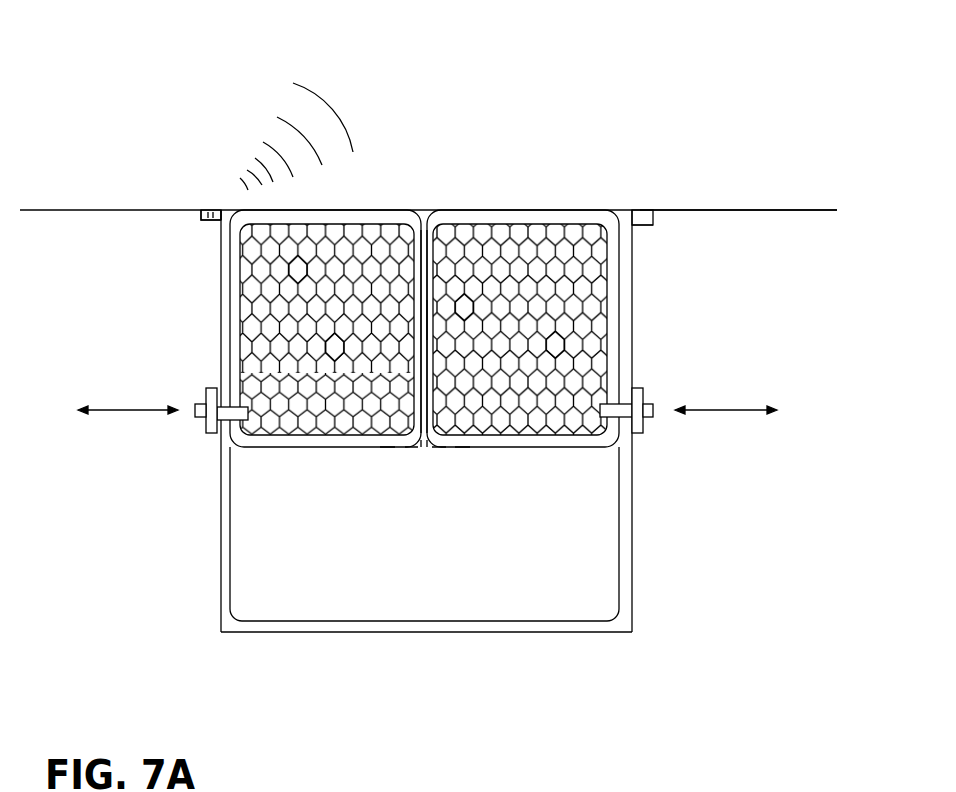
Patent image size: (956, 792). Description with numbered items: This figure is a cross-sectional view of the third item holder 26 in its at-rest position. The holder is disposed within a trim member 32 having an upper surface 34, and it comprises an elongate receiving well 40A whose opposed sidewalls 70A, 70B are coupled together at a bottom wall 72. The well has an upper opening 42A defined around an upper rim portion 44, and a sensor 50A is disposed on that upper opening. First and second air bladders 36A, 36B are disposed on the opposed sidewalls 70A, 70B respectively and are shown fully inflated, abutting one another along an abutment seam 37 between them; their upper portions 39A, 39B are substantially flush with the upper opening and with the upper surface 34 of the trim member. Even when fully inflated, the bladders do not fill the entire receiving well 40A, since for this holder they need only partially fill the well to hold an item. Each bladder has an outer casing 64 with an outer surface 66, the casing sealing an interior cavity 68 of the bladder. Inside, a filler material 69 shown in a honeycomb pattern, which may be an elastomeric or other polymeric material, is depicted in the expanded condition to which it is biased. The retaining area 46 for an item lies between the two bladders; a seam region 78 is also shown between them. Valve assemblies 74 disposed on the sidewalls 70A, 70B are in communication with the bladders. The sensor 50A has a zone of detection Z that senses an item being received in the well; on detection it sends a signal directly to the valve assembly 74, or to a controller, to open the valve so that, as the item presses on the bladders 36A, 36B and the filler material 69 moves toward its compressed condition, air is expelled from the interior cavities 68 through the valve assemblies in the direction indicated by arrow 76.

The third item holder 26 is at (440, 367).
The trim member 32 is at (797, 205).
The upper surface 34 is at (747, 210).
The first air bladder 36A is at (329, 241).
The second air bladder 36B is at (523, 252).
The abutment seam 37 is at (432, 320).
The upper portion 39A is at (352, 211).
The upper portion 39B is at (550, 211).
The receiving well 40A is at (442, 454).
The upper opening 42A is at (218, 213).
The upper rim portion 44 is at (199, 211).
The retaining area 46 is at (423, 211).
The sensor 50A is at (206, 211).
The outer casing 64 is at (385, 423).
The outer surface 66 is at (406, 438).
The interior cavity 68 is at (335, 340).
The filler material 69 is at (298, 268).
The first sidewall 70A is at (221, 549).
The second sidewall 70B is at (632, 553).
The bottom wall 72 is at (425, 633).
The valve assembly 74 is at (196, 380).
The arrow 76 is at (109, 421).
The seam 78 is at (420, 365).
The zone of detection Z is at (285, 110).